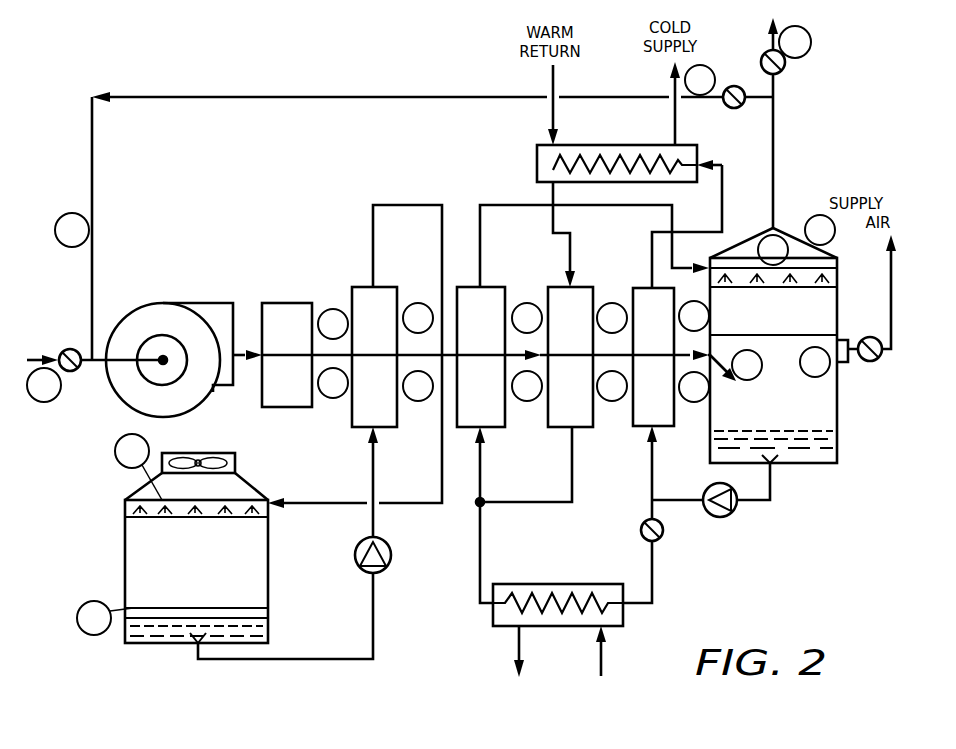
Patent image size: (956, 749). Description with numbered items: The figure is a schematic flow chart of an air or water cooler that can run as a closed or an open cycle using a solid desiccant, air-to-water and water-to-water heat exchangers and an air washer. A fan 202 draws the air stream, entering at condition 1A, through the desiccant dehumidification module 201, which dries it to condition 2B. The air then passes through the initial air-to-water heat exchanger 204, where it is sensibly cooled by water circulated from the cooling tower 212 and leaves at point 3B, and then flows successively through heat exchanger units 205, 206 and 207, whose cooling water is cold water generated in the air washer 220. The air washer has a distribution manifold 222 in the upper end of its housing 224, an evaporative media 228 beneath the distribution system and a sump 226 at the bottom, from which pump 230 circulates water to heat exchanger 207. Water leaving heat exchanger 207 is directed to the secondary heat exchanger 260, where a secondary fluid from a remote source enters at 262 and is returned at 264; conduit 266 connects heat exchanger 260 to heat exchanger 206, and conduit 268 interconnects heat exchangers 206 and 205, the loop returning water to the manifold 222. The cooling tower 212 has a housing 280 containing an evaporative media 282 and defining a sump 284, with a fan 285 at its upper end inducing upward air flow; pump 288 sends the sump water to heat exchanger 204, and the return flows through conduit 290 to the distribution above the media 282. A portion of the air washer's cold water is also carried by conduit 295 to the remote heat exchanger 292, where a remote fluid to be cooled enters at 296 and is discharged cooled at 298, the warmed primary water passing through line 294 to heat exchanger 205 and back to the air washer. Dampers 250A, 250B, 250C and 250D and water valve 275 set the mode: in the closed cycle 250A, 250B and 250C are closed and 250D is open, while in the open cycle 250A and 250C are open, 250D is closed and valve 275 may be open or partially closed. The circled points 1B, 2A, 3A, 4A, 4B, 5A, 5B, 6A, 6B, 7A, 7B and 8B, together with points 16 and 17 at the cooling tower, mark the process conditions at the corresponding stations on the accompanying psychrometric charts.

The desiccant dehumidification module 201 is at (306, 303).
The fan 202 is at (213, 303).
The initial air-to-water heat exchanger 204 is at (397, 290).
The second stage air-to-water heat exchanger 205 is at (505, 290).
The air-to-water heat exchanger 206 is at (590, 287).
The air-to-water heat exchanger 207 is at (636, 290).
The cooling tower 212 is at (140, 492).
The air washer 220 is at (779, 316).
The distribution manifold 222 is at (737, 268).
The housing 224 is at (710, 410).
The sump 226 is at (797, 463).
The evaporative media 228 is at (750, 322).
The pump 230 is at (735, 510).
The damper 250A is at (66, 348).
The damper 250B is at (641, 530).
The damper 250C is at (764, 54).
The damper 250D is at (741, 106).
The secondary heat exchanger 260 is at (537, 160).
The secondary fluid inlet 262 is at (548, 110).
The secondary fluid return 264 is at (671, 110).
The conduit 266 is at (562, 224).
The conduit 268 is at (512, 505).
The water valve 275 is at (870, 362).
The housing 280 is at (198, 532).
The evaporative media 282 is at (125, 548).
The sump 284 is at (268, 624).
The fan 285 is at (198, 455).
The pump 288 is at (391, 548).
The conduit 290 is at (442, 480).
The remote heat exchanger 292 is at (600, 584).
The water line 294 is at (480, 590).
The conduit 295 is at (656, 570).
The remote fluid inlet 296 is at (606, 664).
The cooled fluid discharge 298 is at (512, 640).
The state point 16 is at (105, 618).
The state point 17 is at (138, 467).
The process condition point 1A is at (421, 165).
The process condition point 1B is at (44, 385).
The state point 2A is at (333, 324).
The process condition point 2B is at (333, 383).
The state point 3A is at (418, 318).
The process condition point 3B is at (418, 386).
The state point 4A is at (527, 318).
The process condition point 4B is at (527, 386).
The state point 5A is at (612, 318).
The process condition point 5B is at (612, 386).
The state point 6A is at (694, 316).
The process condition point 6B is at (694, 387).
The state point 7A is at (747, 365).
The process condition point 7B is at (815, 362).
The process condition point 8B is at (807, 135).